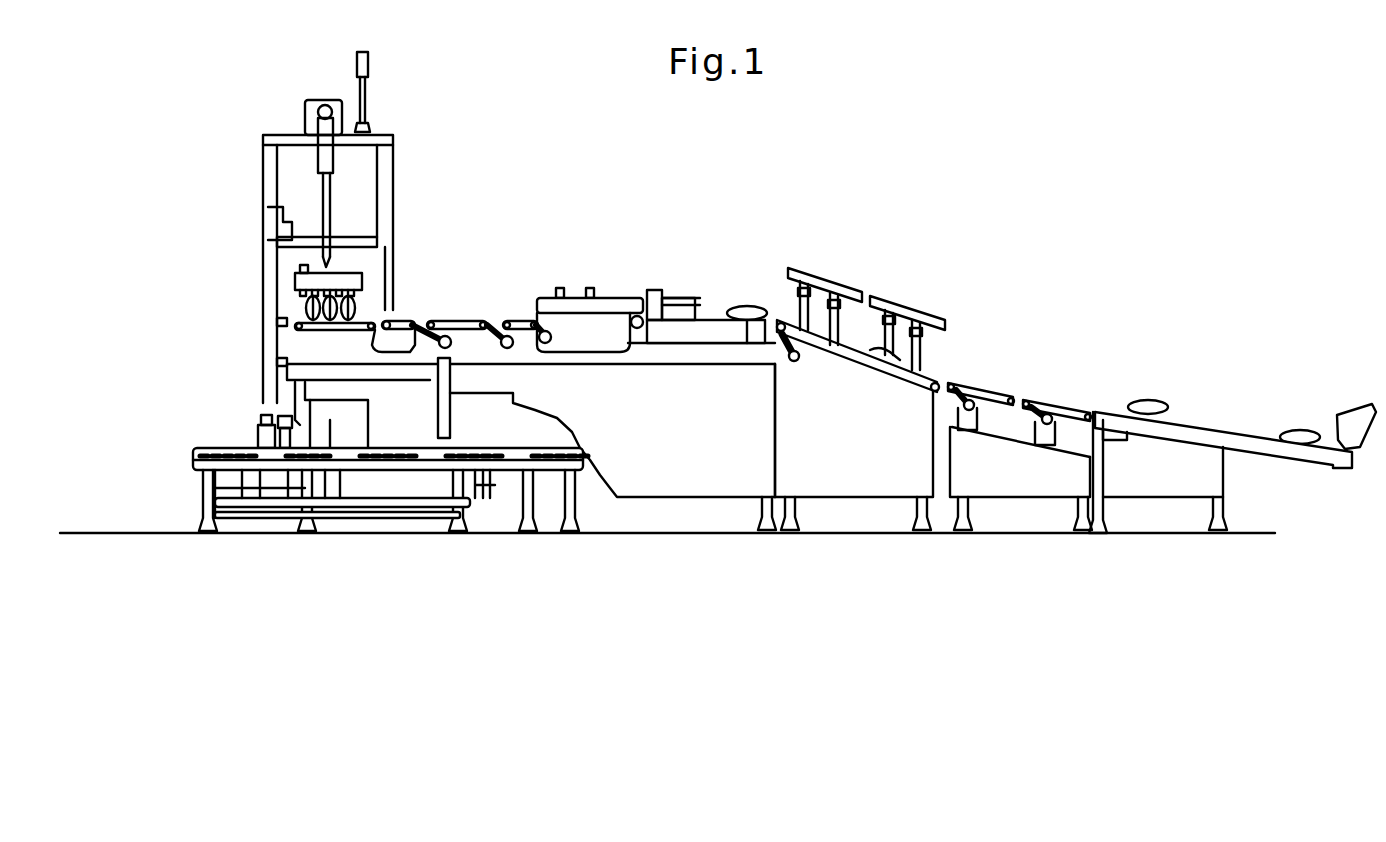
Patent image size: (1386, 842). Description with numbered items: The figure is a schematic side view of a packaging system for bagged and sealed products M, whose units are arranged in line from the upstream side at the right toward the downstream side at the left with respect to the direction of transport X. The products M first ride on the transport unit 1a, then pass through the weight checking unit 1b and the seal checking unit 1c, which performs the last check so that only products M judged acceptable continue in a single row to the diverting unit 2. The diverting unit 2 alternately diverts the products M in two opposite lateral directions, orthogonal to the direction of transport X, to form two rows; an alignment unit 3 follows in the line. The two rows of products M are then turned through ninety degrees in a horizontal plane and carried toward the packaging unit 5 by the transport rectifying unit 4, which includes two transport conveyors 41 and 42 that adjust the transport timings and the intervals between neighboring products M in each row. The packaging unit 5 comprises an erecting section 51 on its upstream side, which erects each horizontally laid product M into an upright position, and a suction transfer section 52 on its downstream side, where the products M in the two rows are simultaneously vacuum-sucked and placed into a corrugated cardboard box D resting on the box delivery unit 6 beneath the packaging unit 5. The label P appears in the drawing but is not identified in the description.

The transport unit 1a is at (1210, 406).
The weight checking unit 1b is at (1052, 392).
The seal checking unit 1c is at (877, 284).
The diverting unit 2 is at (728, 263).
The alignment unit 3 is at (600, 284).
The transport rectifying unit 4 is at (510, 253).
The transport conveyor 41 is at (522, 315).
The transport conveyor 42 is at (472, 308).
The packaging unit 5 is at (350, 227).
The erecting section 51 is at (407, 313).
The suction transfer section 52 is at (378, 279).
The box delivery unit 6 is at (196, 496).
The bagged and sealed products M is at (305, 316).
The corrugated cardboard box D is at (320, 415).
The pallet P is at (718, 325).
The direction of transport X is at (645, 275).